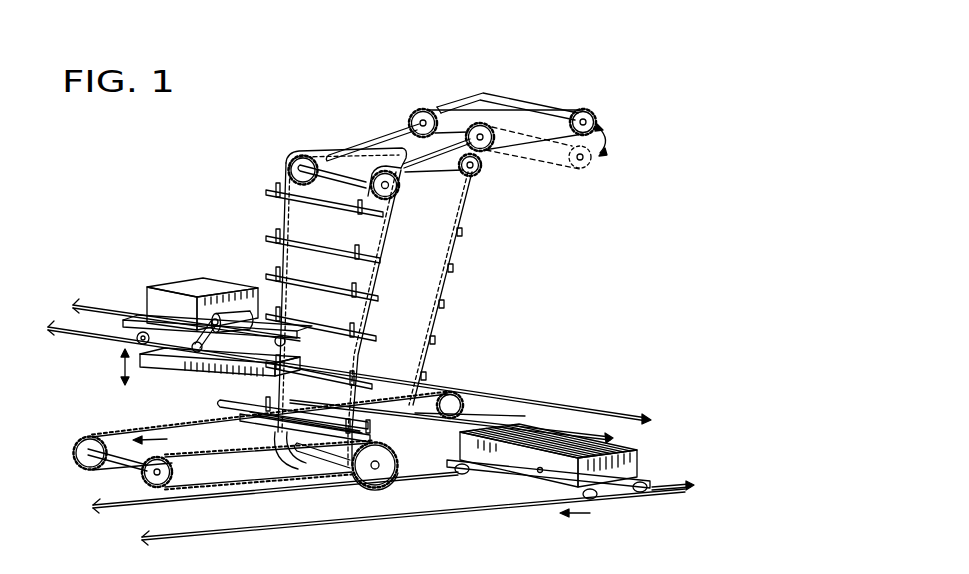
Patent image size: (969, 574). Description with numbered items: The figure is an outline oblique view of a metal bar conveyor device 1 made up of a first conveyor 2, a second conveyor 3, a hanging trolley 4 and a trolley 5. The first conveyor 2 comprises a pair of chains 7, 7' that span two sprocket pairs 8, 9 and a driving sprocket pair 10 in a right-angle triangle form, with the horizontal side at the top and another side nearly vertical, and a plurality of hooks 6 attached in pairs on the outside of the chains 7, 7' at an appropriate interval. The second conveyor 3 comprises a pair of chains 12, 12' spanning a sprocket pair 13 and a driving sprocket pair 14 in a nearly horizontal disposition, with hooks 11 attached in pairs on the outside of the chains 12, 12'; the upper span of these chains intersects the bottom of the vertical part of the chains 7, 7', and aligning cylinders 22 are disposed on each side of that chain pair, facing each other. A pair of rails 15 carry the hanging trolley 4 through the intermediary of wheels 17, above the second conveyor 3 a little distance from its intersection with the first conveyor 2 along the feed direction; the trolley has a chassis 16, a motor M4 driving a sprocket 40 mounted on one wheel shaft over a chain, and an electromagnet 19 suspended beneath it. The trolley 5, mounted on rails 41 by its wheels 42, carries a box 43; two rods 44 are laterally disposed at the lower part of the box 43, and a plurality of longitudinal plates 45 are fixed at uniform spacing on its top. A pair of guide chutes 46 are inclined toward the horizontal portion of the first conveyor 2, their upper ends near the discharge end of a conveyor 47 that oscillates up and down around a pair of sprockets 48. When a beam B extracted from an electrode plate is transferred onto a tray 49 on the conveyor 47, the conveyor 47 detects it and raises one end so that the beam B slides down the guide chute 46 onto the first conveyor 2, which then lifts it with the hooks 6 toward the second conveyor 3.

The conveyor device 1 is at (213, 218).
The first conveyor 2 is at (331, 142).
The second conveyor 3 is at (116, 422).
The hanging trolley 4 is at (167, 268).
The trolley 5 is at (530, 494).
The hooks 6 is at (275, 232).
The chain 7 is at (465, 306).
The chain 7' is at (411, 189).
The sprocket pair 8 is at (481, 170).
The sprocket pair 9 is at (300, 158).
The driving sprocket pair 10 is at (358, 470).
The hooks 11 is at (190, 456).
The chain 12 is at (254, 423).
The chain 12' is at (268, 485).
The sprocket pair 13 is at (453, 397).
The driving sprocket pair 14 is at (83, 458).
The rails 15 is at (105, 305).
The chassis 16 is at (123, 327).
The wheels 17 is at (143, 340).
The electromagnet 19 is at (133, 368).
The aligning cylinder 22 is at (220, 403).
The sprocket 40 is at (197, 340).
The rails 41 is at (224, 533).
The wheel and rail 42 is at (593, 500).
The box 43 is at (625, 467).
The rods 44 is at (490, 458).
The longitudinal plates 45 is at (562, 443).
The guide chutes 46 is at (386, 122).
The conveyor 47 is at (528, 95).
The sprockets 48 is at (423, 111).
The tray 49 is at (559, 113).
The beam B is at (376, 299).
The motor M4 is at (240, 320).